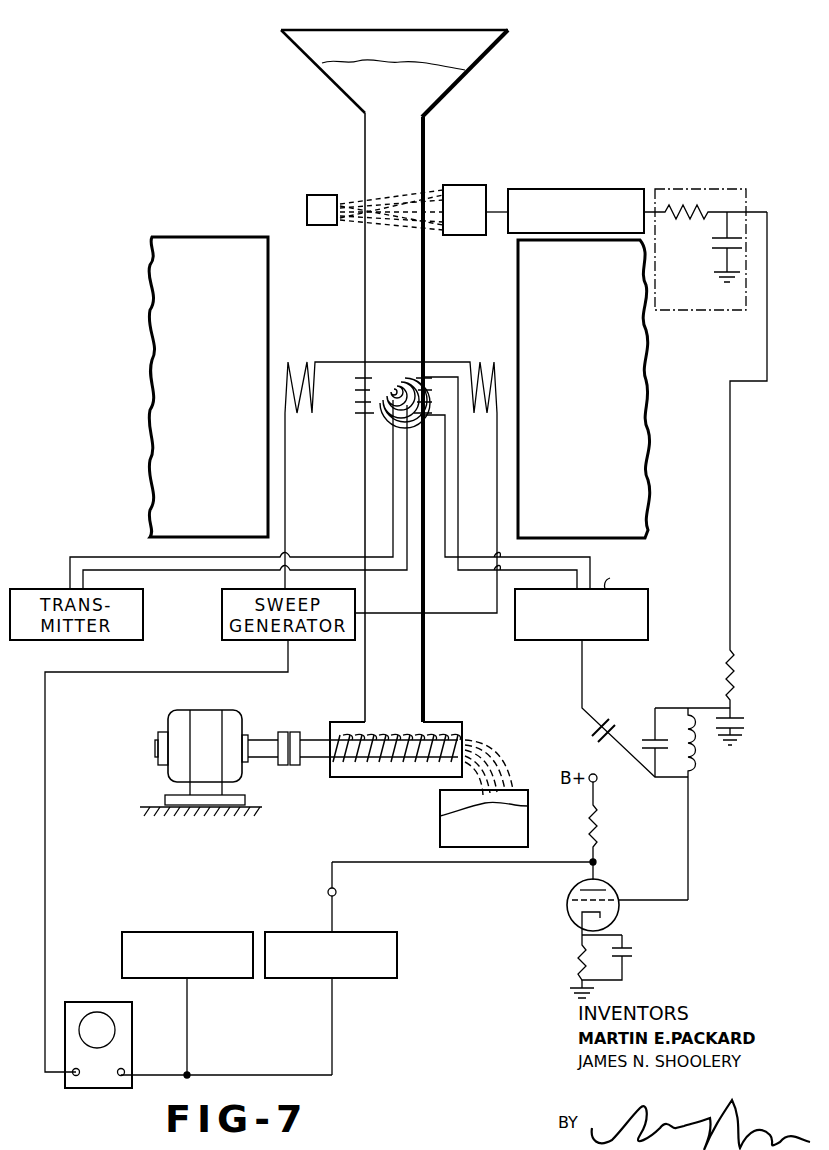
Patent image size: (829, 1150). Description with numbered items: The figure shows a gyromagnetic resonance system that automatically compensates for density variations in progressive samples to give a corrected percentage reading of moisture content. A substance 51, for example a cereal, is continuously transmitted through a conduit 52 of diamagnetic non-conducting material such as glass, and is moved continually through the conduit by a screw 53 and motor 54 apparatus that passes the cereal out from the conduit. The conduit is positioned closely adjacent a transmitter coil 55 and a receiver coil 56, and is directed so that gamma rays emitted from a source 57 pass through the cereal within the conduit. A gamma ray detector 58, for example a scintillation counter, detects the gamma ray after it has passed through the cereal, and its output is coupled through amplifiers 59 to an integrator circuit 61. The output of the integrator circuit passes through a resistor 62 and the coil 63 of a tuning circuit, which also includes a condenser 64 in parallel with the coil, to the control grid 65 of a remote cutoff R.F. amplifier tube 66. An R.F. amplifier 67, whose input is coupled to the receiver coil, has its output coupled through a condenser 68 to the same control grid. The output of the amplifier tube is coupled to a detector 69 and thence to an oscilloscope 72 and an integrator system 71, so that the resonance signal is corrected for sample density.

The substance 51 is at (357, 62).
The conduit 52 is at (365, 145).
The screw 53 is at (392, 777).
The motor 54 is at (168, 726).
The transmitter coil 55 is at (400, 368).
The receiver coil 56 is at (362, 412).
The source 57 is at (340, 226).
The gamma ray detector 58 is at (484, 236).
The amplifiers 59 is at (584, 189).
The integrator circuit 61 is at (700, 189).
The resistor 62 is at (728, 684).
The coil 63 is at (690, 764).
The condenser 64 is at (652, 740).
The control grid 65 is at (608, 900).
The remote cutoff R.F. amplifier tube 66 is at (568, 905).
The R.F. amplifier 67 is at (648, 628).
The condenser 68 is at (594, 730).
The detector 69 is at (346, 932).
The integrator system 71 is at (200, 932).
The oscilloscope 72 is at (108, 1002).